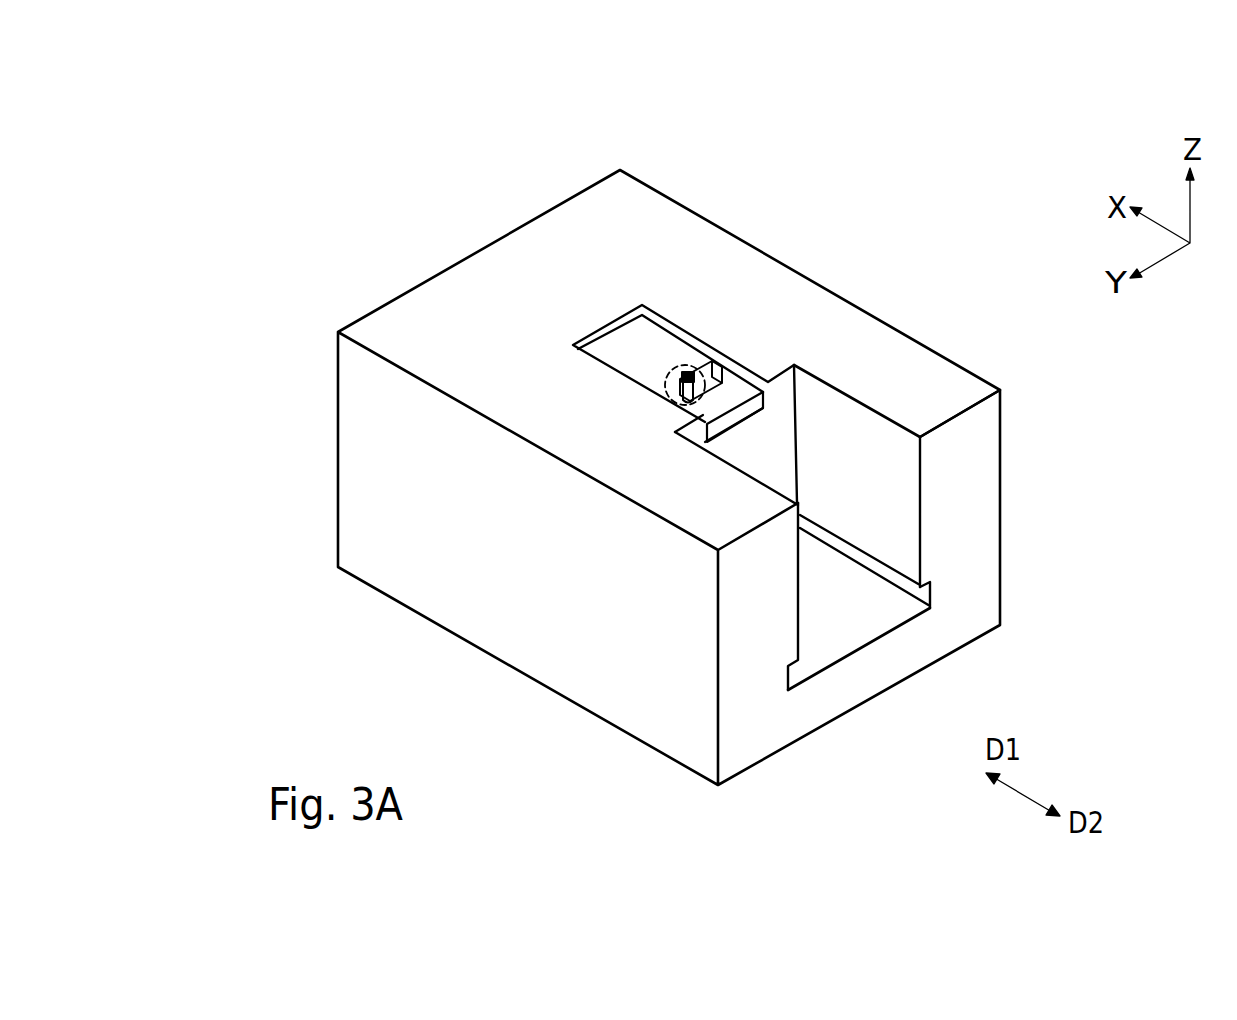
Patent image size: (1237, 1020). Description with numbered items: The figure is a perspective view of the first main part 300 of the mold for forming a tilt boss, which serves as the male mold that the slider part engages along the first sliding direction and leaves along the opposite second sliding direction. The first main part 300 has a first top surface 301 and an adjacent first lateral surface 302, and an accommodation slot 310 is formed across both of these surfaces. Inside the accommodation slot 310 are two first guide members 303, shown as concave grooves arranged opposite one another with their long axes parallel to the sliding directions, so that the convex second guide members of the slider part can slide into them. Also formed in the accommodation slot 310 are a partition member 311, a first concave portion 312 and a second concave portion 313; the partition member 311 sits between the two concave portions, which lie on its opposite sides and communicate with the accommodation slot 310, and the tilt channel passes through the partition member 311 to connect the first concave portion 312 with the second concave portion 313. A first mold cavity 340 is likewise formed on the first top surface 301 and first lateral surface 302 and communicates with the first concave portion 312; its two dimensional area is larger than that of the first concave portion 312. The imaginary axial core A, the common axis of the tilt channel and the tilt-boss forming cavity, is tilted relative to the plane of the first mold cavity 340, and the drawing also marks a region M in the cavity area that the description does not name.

The first main part 300 is at (283, 223).
The first mold cavity 340 is at (637, 333).
The imaginary axial core A is at (674, 355).
The metal member M is at (688, 362).
The first concave portion 312 is at (740, 404).
The partition member 311 is at (752, 428).
The second concave portion 313 is at (756, 450).
The first top surface 301 is at (968, 385).
The first lateral surface 302 is at (980, 548).
The first guide members 303 is at (932, 591).
The accommodation slot 310 is at (867, 650).